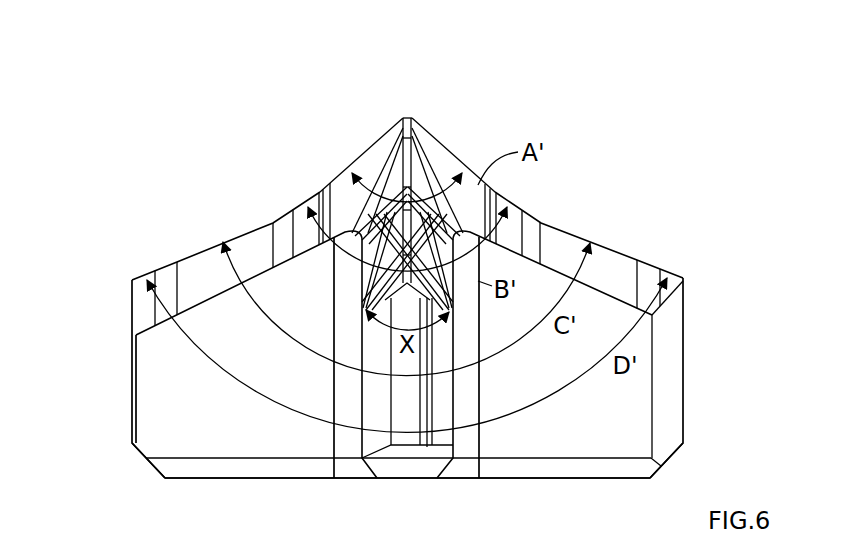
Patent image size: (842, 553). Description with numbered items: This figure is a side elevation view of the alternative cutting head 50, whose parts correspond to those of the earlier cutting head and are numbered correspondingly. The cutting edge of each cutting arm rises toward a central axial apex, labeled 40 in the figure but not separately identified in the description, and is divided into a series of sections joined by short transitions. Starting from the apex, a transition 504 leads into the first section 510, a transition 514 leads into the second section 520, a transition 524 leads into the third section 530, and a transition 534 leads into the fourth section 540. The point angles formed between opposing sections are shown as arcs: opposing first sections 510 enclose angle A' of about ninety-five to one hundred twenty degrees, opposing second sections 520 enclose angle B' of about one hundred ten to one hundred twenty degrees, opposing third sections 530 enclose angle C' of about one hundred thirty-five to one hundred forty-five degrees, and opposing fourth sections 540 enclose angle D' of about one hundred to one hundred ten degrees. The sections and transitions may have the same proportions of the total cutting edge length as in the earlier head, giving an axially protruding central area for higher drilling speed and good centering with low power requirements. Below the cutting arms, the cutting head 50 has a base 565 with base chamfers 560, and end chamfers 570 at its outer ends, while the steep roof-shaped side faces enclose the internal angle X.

The tip apex 40 is at (407, 117).
The cutting head 50 is at (200, 132).
The transition 504 is at (400, 125).
The first section 510 is at (368, 165).
The transition 514 is at (322, 197).
The second section 520 is at (312, 206).
The transition 524 is at (288, 222).
The third section 530 is at (192, 247).
The transition 534 is at (160, 262).
The fourth section 540 is at (140, 274).
The base chamfers 560 is at (288, 470).
The base 565 is at (538, 478).
The end chamfers 570 is at (147, 460).